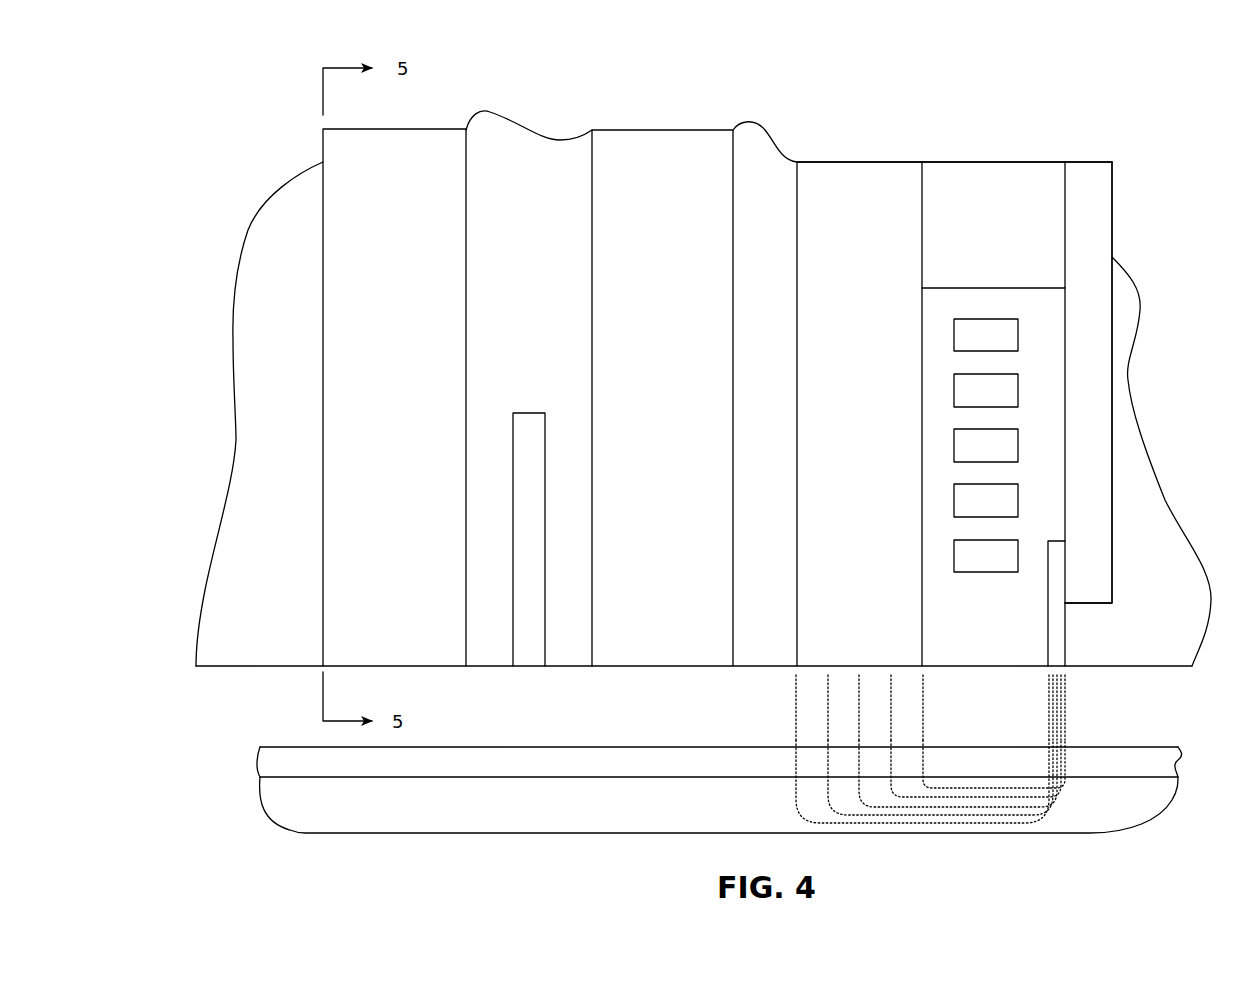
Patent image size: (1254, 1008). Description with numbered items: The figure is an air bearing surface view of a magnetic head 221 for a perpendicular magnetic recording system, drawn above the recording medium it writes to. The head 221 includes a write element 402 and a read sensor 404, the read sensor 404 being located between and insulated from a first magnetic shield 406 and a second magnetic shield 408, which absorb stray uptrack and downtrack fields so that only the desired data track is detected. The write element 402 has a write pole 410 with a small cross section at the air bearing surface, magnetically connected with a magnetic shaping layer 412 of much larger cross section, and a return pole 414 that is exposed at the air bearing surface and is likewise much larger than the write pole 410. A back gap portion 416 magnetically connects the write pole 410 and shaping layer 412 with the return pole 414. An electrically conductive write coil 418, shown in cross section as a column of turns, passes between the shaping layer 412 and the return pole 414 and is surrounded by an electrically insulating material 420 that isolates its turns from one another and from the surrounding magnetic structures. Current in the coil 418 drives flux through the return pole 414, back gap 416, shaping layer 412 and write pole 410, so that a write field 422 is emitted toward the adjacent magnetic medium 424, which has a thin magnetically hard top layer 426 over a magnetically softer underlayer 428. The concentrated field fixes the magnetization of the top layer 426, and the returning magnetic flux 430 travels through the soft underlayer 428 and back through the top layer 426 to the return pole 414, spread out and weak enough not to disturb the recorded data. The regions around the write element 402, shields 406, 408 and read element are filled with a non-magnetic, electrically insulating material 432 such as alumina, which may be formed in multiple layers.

The magnetic head 221 is at (922, 116).
The write element 402 is at (812, 158).
The read sensor 404 is at (527, 668).
The first magnetic shield 406 is at (637, 400).
The second magnetic shield 408 is at (372, 396).
The write pole 410 is at (1055, 636).
The magnetic shaping layer 412 is at (1083, 539).
The return pole 414 is at (822, 370).
The back gap portion 416 is at (962, 222).
The write coil 418 is at (985, 336).
The electrically insulating material 420 is at (950, 632).
The write field 422 is at (1068, 703).
The magnetic medium 424 is at (588, 742).
The magnetically hard top layer 426 is at (612, 762).
The soft underlayer 428 is at (512, 806).
The magnetic flux 430 is at (1057, 810).
The non-magnetic electrically insulating material 432 is at (277, 210).